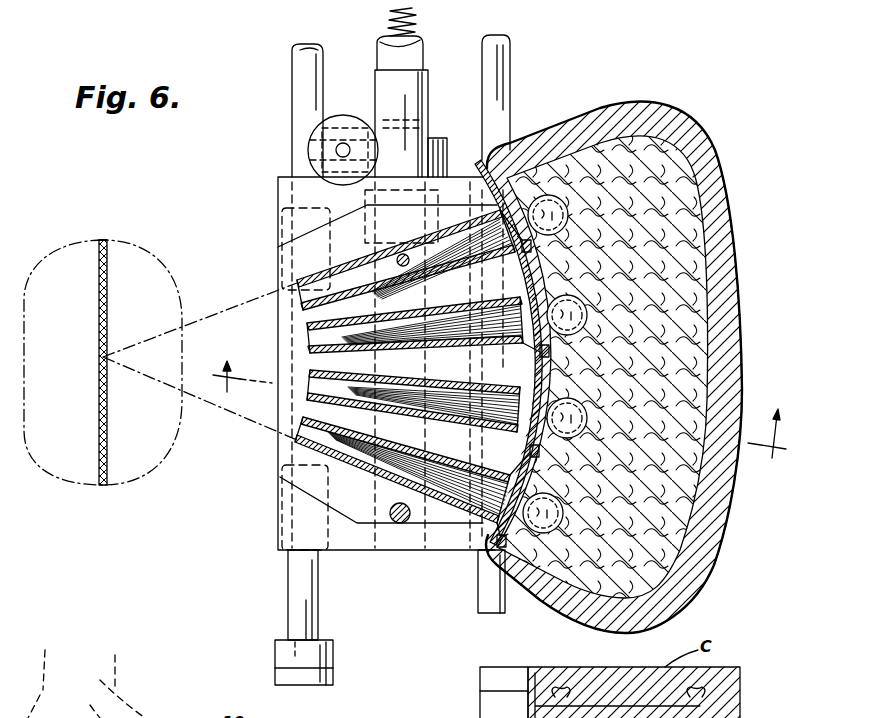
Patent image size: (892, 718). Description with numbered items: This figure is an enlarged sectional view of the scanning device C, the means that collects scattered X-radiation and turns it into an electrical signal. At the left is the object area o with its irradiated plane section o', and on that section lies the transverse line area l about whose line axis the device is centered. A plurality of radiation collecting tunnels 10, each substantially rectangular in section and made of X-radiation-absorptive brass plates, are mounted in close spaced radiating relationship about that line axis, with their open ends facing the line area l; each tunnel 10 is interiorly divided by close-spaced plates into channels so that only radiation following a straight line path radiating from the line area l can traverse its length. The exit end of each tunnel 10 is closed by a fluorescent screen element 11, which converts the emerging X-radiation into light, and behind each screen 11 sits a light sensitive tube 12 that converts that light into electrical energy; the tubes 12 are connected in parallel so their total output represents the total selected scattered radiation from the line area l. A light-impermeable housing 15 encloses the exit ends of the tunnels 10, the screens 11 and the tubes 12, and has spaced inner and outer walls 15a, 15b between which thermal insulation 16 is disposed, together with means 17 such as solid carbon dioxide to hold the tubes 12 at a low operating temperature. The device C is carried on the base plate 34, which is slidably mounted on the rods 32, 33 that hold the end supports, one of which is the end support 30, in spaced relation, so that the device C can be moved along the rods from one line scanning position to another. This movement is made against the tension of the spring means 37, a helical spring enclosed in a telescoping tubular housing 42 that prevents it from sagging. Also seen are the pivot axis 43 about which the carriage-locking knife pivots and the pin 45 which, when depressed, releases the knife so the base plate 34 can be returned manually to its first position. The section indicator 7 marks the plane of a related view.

The radiation collecting tunnel 10 is at (297, 440).
The fluorescent screen element 11 is at (535, 357).
The light sensitive tube 12 is at (525, 272).
The housing 15 is at (716, 569).
The inner wall 15a is at (733, 481).
The outer wall 15b is at (700, 284).
The thermal insulation 16 is at (727, 528).
The cooling means 17 is at (708, 600).
The end support 30 is at (333, 676).
The rod 32 is at (510, 62).
The rod 33 is at (292, 70).
The base plate 34 is at (275, 522).
The spring means 37 is at (415, 17).
The telescoping tubular housing 42 is at (385, 53).
The pivot axis 43 is at (418, 112).
The pin 45 is at (343, 144).
The section line 7 is at (501, 409).
The scanning device C is at (725, 213).
The line area l is at (100, 356).
The object area o is at (138, 252).
The irradiated plane section o' is at (117, 220).